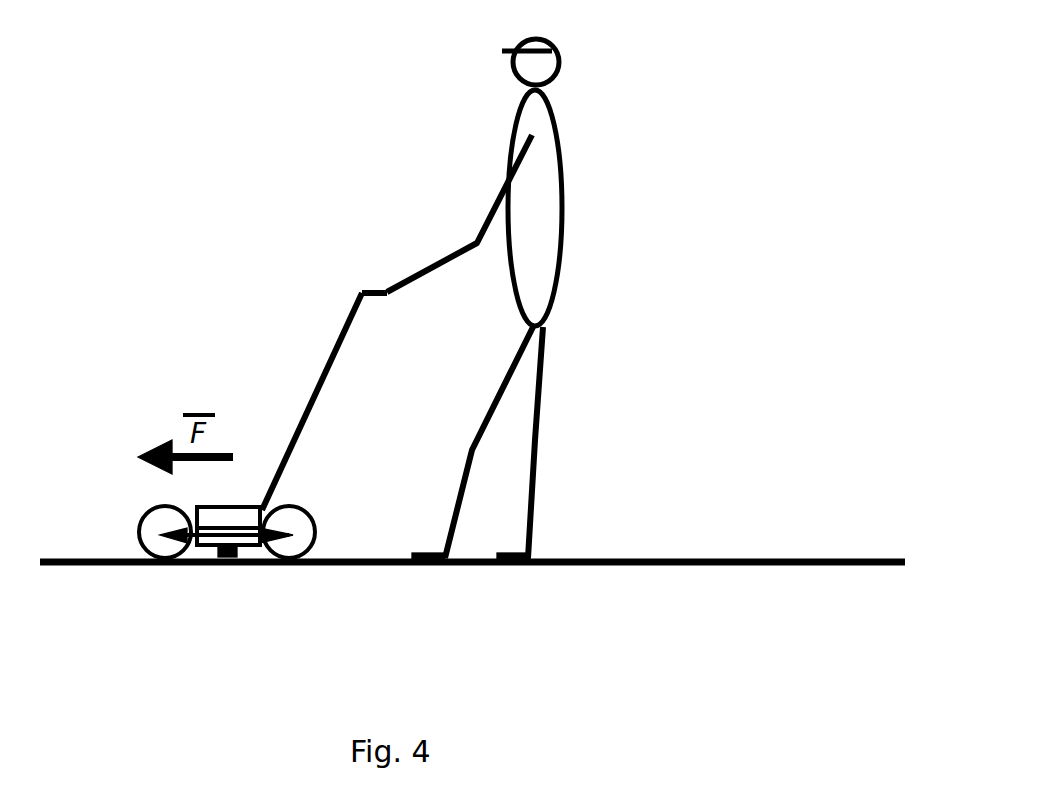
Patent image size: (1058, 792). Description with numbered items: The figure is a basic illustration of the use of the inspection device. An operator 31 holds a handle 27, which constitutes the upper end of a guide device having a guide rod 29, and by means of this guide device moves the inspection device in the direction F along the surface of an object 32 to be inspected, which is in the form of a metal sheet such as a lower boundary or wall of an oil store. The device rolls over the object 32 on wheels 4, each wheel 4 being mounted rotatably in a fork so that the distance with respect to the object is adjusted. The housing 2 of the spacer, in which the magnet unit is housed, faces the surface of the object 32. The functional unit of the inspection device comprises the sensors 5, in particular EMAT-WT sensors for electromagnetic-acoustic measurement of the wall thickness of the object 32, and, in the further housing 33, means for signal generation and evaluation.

The housing 2 is at (212, 543).
The wheel 4 is at (152, 522).
The sensors 5 is at (227, 563).
The handle 27 is at (375, 287).
The guide rod 29 is at (320, 372).
The operator 31 is at (600, 141).
The object 32 is at (652, 567).
The further housing 33 is at (235, 517).